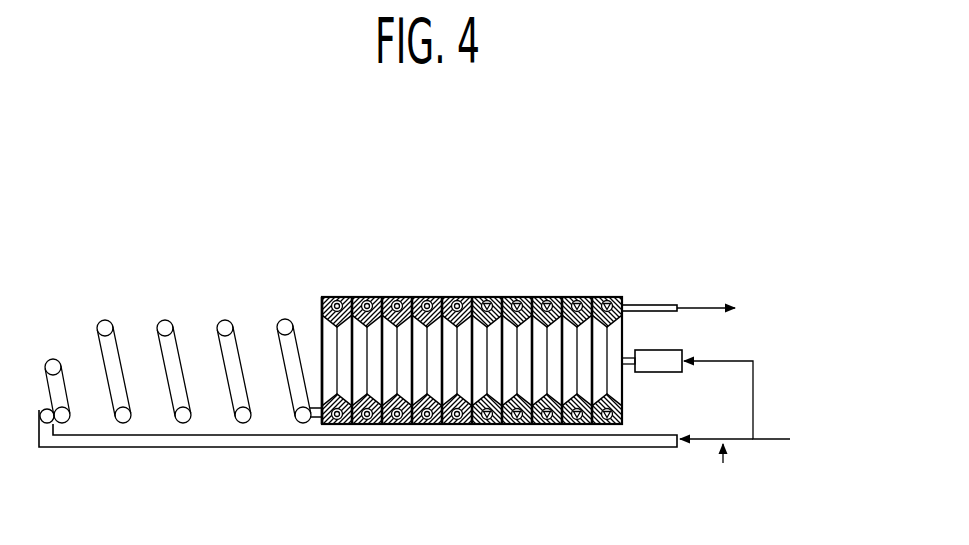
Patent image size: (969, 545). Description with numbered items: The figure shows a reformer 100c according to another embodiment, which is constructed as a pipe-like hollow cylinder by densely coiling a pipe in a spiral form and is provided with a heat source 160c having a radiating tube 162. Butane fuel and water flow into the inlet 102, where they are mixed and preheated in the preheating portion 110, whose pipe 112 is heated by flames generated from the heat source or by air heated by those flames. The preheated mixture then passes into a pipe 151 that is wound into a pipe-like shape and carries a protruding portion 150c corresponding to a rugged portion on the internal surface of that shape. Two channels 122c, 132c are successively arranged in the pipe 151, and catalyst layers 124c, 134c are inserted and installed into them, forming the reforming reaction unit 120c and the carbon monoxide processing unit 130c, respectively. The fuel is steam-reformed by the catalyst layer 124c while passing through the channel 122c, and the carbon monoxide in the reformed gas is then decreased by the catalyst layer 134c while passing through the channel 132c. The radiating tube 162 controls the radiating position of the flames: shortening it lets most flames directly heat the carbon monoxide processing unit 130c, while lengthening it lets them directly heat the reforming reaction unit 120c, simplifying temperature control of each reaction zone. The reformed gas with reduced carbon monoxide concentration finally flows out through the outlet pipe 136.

The reformer 100c is at (88, 194).
The inlet 102 is at (643, 448).
The preheating portion 110 is at (179, 300).
The pipe 112 is at (226, 320).
The reforming reaction unit 120c is at (424, 256).
The channel 122c is at (327, 297).
The catalyst layer 124c is at (368, 297).
The pipe 151 is at (455, 297).
The protruding portion 150c is at (497, 297).
The carbon monoxide processing unit 130c is at (559, 251).
The channel 132c is at (568, 297).
The catalyst layer 134c is at (607, 297).
The outlet pipe 136 is at (662, 305).
The heat source 160c is at (670, 350).
The radiating tube 162 is at (630, 374).